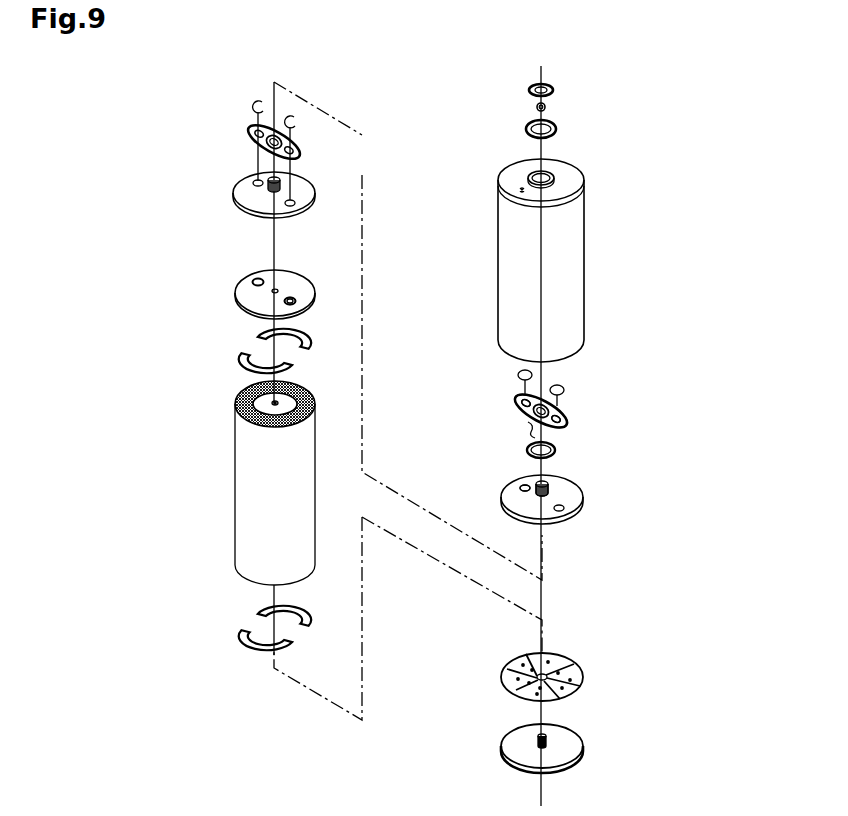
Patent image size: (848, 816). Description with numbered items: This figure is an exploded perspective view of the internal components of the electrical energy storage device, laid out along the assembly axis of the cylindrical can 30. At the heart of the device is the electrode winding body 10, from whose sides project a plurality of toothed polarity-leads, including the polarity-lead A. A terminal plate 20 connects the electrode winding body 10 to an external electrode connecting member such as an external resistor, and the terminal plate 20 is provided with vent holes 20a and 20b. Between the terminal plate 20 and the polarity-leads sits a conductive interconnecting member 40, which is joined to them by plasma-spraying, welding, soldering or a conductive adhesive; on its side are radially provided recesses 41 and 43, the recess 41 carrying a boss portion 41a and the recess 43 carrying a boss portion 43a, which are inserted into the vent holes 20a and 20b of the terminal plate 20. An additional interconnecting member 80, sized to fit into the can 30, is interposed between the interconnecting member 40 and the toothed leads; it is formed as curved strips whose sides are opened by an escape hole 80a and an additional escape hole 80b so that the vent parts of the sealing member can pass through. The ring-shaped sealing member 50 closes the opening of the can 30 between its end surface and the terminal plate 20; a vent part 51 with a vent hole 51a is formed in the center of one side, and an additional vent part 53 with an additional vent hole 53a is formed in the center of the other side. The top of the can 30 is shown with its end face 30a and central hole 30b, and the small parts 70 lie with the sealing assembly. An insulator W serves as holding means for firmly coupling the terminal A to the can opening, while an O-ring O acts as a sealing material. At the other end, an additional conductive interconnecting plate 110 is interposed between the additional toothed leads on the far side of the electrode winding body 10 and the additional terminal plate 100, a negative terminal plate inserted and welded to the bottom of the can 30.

The electrode winding body 10 is at (243, 497).
The terminal plate 20 is at (242, 180).
The vent hole 20a is at (578, 503).
The vent hole 20b is at (522, 490).
The cylindrical can 30 is at (591, 223).
The top face 30a is at (555, 188).
The opening 30b is at (527, 170).
The conductive interconnecting member 40 is at (243, 283).
The recess 41 is at (303, 312).
The boss portion 41a is at (298, 306).
The recess 43 is at (236, 303).
The hole 43a is at (257, 280).
The ring-shaped sealing member 50 is at (255, 147).
The vent part 51 is at (570, 422).
The vent hole 51a is at (568, 402).
The additional vent part 53 is at (517, 415).
The additional vent hole 53a is at (517, 396).
The pin 70 is at (533, 375).
The additional interconnecting member 80 is at (260, 357).
The escape hole 80a is at (298, 360).
The additional escape hole 80b is at (234, 331).
The additional terminal plate 100 is at (575, 747).
The additional conductive interconnecting plate 110 is at (568, 670).
The polarity-lead A is at (236, 400).
The O-ring O is at (557, 128).
The insulator W is at (553, 92).